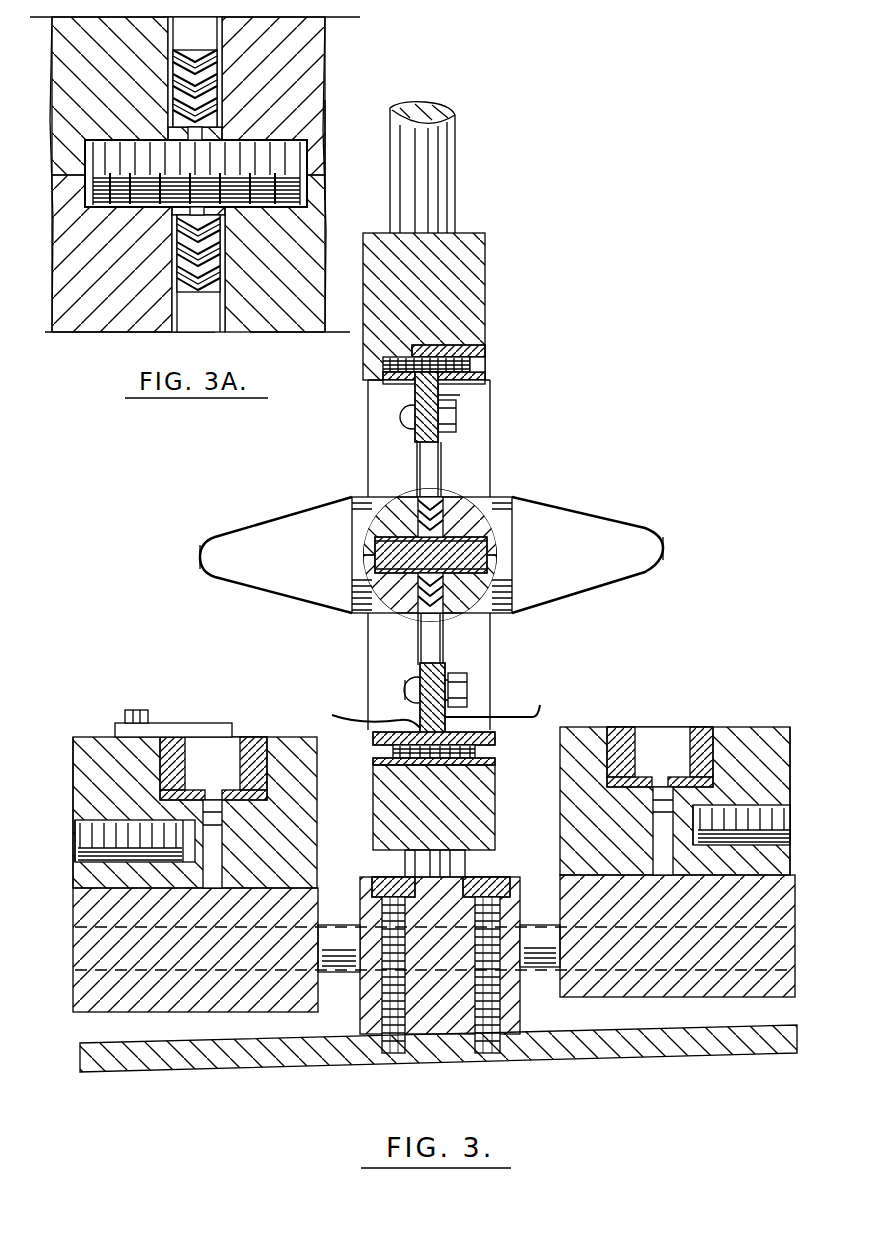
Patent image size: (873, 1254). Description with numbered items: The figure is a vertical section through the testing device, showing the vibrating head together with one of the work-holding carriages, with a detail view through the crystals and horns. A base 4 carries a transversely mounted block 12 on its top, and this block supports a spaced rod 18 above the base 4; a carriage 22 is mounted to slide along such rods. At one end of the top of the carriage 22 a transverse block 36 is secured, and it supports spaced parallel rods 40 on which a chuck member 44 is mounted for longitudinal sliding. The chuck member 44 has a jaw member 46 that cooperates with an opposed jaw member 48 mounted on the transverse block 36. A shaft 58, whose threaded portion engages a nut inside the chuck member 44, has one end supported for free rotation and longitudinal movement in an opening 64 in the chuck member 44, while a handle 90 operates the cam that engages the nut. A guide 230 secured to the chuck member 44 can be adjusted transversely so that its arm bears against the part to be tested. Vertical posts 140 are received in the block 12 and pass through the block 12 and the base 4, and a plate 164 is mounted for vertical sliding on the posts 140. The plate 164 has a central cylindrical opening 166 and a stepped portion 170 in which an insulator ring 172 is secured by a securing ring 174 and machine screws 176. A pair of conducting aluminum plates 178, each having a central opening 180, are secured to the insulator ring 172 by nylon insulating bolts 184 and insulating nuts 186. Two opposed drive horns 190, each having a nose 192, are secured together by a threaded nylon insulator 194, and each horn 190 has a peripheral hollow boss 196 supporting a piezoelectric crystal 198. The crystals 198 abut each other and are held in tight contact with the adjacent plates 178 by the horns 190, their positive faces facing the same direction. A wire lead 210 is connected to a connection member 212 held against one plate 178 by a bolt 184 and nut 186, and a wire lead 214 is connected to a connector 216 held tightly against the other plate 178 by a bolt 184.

In FIG. 3, the base 4 is at (632, 1050).
In FIG. 3, the transverse block 12 is at (520, 1000).
In FIG. 3, the rod 18 is at (340, 940).
In FIG. 3, the carriage 22 is at (198, 924).
In FIG. 3, the transverse block 36 is at (303, 783).
In FIG. 3, the rod 40 is at (222, 820).
In FIG. 3, the chuck member 44 is at (92, 748).
In FIG. 3, the jaw member 46 is at (168, 740).
In FIG. 3, the jaw member 48 is at (257, 740).
In FIG. 3, the shaft 58 is at (128, 830).
In FIG. 3, the opening 64 is at (88, 810).
In FIG. 3A, the handle 90 is at (85, 325).
In FIG. 3, the vertical post 140 is at (455, 182).
In FIG. 3, the plate 164 is at (480, 265).
In FIG. 3, the central cylindrical opening 166 is at (383, 368).
In FIG. 3, the stepped portion 170 is at (410, 346).
In FIG. 3, the insulator ring 172 is at (415, 400).
In FIG. 3, the securing ring 174 is at (470, 390).
In FIG. 3, the machine screws 176 is at (478, 360).
In FIG. 3A, the conducting metal plate 178 is at (170, 42).
In FIG. 3, the conducting metal plate 178 is at (417, 470).
In FIG. 3, the central opening 180 is at (490, 495).
In FIG. 3, the insulating bolt 184 is at (462, 417).
In FIG. 3, the insulating nut 186 is at (470, 672).
In FIG. 3A, the drive horn 190 is at (325, 60).
In FIG. 3, the drive horn 190 is at (282, 528).
In FIG. 3, the nose 192 is at (200, 557).
In FIG. 3A, the threaded insulator 194 is at (150, 207).
In FIG. 3, the threaded insulator 194 is at (375, 555).
In FIG. 3A, the peripheral hollow boss 196 is at (178, 238).
In FIG. 3A, the piezoelectric crystal 198 is at (182, 75).
In FIG. 3, the wire lead 210 is at (542, 703).
In FIG. 3, the connection member 212 is at (448, 675).
In FIG. 3, the wire lead 214 is at (352, 712).
In FIG. 3, the connector 216 is at (418, 678).
In FIG. 3, the guide 230 is at (212, 725).